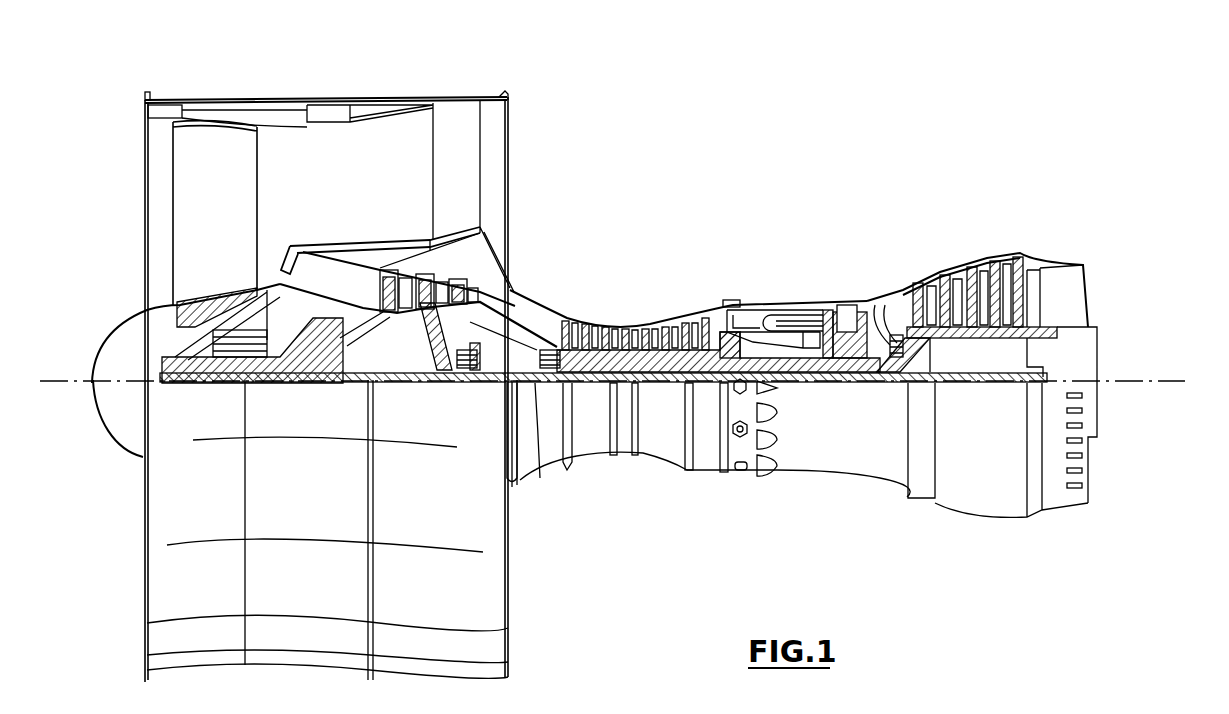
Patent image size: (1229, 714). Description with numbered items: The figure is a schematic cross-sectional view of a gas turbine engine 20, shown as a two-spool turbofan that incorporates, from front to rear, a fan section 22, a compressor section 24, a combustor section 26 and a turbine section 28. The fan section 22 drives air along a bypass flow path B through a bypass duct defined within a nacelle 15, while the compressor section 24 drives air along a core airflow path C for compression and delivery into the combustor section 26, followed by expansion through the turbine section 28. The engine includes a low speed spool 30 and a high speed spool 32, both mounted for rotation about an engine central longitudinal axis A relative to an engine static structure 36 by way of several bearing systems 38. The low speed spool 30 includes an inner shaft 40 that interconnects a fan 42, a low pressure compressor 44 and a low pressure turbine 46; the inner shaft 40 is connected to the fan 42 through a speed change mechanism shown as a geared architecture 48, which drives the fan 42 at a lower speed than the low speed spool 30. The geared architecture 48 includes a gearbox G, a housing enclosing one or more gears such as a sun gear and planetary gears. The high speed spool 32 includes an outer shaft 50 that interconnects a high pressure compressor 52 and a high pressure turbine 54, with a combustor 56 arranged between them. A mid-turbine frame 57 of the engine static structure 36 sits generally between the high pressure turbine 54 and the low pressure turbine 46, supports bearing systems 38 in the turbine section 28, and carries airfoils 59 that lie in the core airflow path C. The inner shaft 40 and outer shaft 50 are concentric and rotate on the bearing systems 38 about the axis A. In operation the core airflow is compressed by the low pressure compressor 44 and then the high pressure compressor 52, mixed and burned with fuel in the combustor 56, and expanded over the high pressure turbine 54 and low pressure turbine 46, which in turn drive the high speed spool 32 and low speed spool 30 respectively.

The nacelle 15 is at (327, 103).
The gas turbine engine 20 is at (785, 148).
The fan section 22 is at (257, 90).
The compressor section 24 is at (557, 290).
The combustor section 26 is at (781, 279).
The turbine section 28 is at (928, 242).
The low speed spool 30 is at (663, 395).
The high speed spool 32 is at (712, 303).
The engine static structure 36 is at (707, 478).
The bearing systems 38 is at (443, 372).
The inner shaft 40 is at (540, 478).
The fan 42 is at (228, 226).
The low pressure compressor 44 is at (437, 285).
The low pressure turbine 46 is at (975, 270).
The geared architecture 48 is at (333, 383).
The outer shaft 50 is at (793, 383).
The high pressure compressor 52 is at (638, 349).
The high pressure turbine 54 is at (848, 308).
The combustor 56 is at (782, 320).
The mid-turbine frame 57 is at (897, 285).
The airfoils 59 is at (890, 322).
The engine central longitudinal axis A is at (1180, 381).
The bypass flow path B is at (293, 173).
The core airflow path C is at (333, 282).
The gearbox G is at (347, 353).